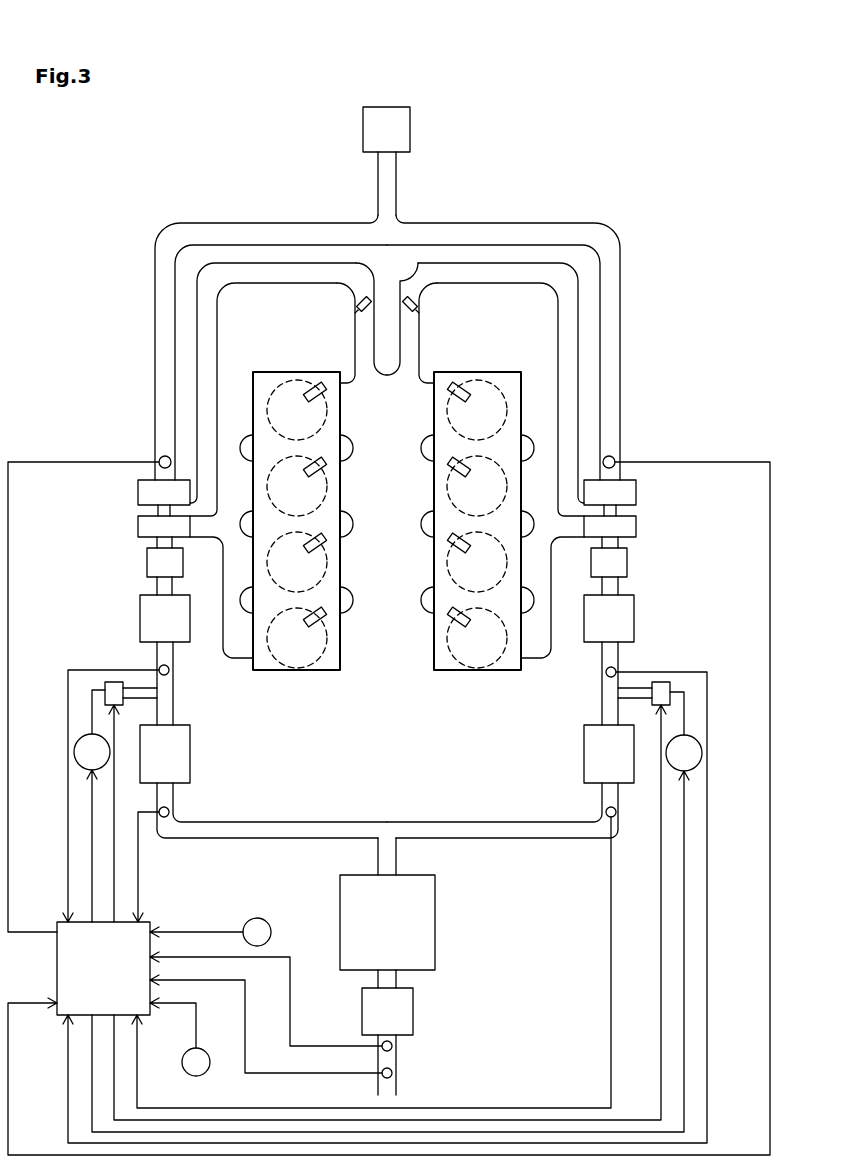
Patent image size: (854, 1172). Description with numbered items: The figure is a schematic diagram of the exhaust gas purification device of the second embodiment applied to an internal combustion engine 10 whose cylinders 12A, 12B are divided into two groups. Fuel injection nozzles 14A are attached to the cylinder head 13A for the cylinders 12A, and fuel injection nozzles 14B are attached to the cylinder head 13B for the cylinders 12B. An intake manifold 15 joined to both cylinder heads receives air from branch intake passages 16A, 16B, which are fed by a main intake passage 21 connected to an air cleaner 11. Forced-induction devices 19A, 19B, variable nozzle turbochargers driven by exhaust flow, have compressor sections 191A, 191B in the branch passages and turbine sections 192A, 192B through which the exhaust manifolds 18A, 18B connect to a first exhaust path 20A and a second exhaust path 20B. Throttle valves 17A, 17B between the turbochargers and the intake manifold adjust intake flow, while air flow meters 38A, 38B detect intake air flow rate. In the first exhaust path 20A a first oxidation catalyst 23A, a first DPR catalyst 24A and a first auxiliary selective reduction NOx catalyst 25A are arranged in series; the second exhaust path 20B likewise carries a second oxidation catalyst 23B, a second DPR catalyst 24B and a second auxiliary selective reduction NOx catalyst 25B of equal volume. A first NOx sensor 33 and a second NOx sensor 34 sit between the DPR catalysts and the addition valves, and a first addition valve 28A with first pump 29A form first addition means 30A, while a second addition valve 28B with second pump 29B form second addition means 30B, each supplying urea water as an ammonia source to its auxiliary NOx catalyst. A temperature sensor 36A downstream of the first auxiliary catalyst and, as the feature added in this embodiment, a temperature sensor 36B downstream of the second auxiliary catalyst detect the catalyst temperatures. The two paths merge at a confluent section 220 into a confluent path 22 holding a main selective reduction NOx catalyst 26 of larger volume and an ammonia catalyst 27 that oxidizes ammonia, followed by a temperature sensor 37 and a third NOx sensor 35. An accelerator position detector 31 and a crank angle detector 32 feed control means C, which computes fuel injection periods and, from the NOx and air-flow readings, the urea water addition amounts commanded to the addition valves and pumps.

The internal combustion engine 10 is at (173, 177).
The air cleaner 11 is at (411, 127).
The main intake passage 21 is at (397, 173).
The branch intake passage 16A is at (268, 272).
The branch intake passage 16B is at (506, 272).
The throttle valve 17A is at (362, 299).
The throttle valve 17B is at (413, 299).
The air flow meter 38A is at (163, 455).
The air flow meter 38B is at (611, 455).
The forced-induction device 19A is at (126, 455).
The forced-induction device 19B is at (654, 455).
The compressor section 191A is at (147, 485).
The turbine section 192A is at (143, 525).
The compressor section 191B is at (627, 485).
The turbine section 192B is at (631, 525).
The intake manifold 15 is at (387, 527).
The cylinder head 13A is at (322, 670).
The cylinder head 13B is at (465, 670).
The cylinders 12A is at (337, 613).
The cylinders 12B is at (437, 613).
The fuel injection nozzles 14A is at (306, 548).
The fuel injection nozzles 14B is at (468, 548).
The exhaust manifold 18A is at (223, 622).
The exhaust manifold 18B is at (551, 622).
The first exhaust path 20A is at (157, 546).
The second exhaust path 20B is at (618, 546).
The first oxidation catalyst 23A is at (147, 568).
The second oxidation catalyst 23B is at (627, 568).
The first diesel particulate reactor catalyst 24A is at (140, 604).
The second diesel particulate reactor catalyst 24B is at (634, 604).
The first auxiliary selective reduction NOx catalyst 25A is at (190, 755).
The second auxiliary selective reduction NOx catalyst 25B is at (584, 755).
The first NOx sensor 33 is at (169, 672).
The second NOx sensor 34 is at (606, 672).
The temperature sensor 36A is at (169, 812).
The temperature sensor 36B is at (606, 812).
The first addition means 30A is at (89, 766).
The second addition means 30B is at (421, 871).
The first addition valve 28A is at (112, 682).
The second addition valve 28B is at (666, 682).
The first pump 29A is at (69, 793).
The second pump 29B is at (683, 734).
The confluent section 220 is at (388, 822).
The confluent path 22 is at (397, 860).
The main selective reduction NOx catalyst 26 is at (436, 915).
The ammonia catalyst 27 is at (414, 1008).
The temperature sensor 37 is at (393, 1046).
The third NOx sensor 35 is at (393, 1073).
The accelerator position detector 31 is at (272, 932).
The crank angle detector 32 is at (211, 1062).
The control means C is at (57, 968).